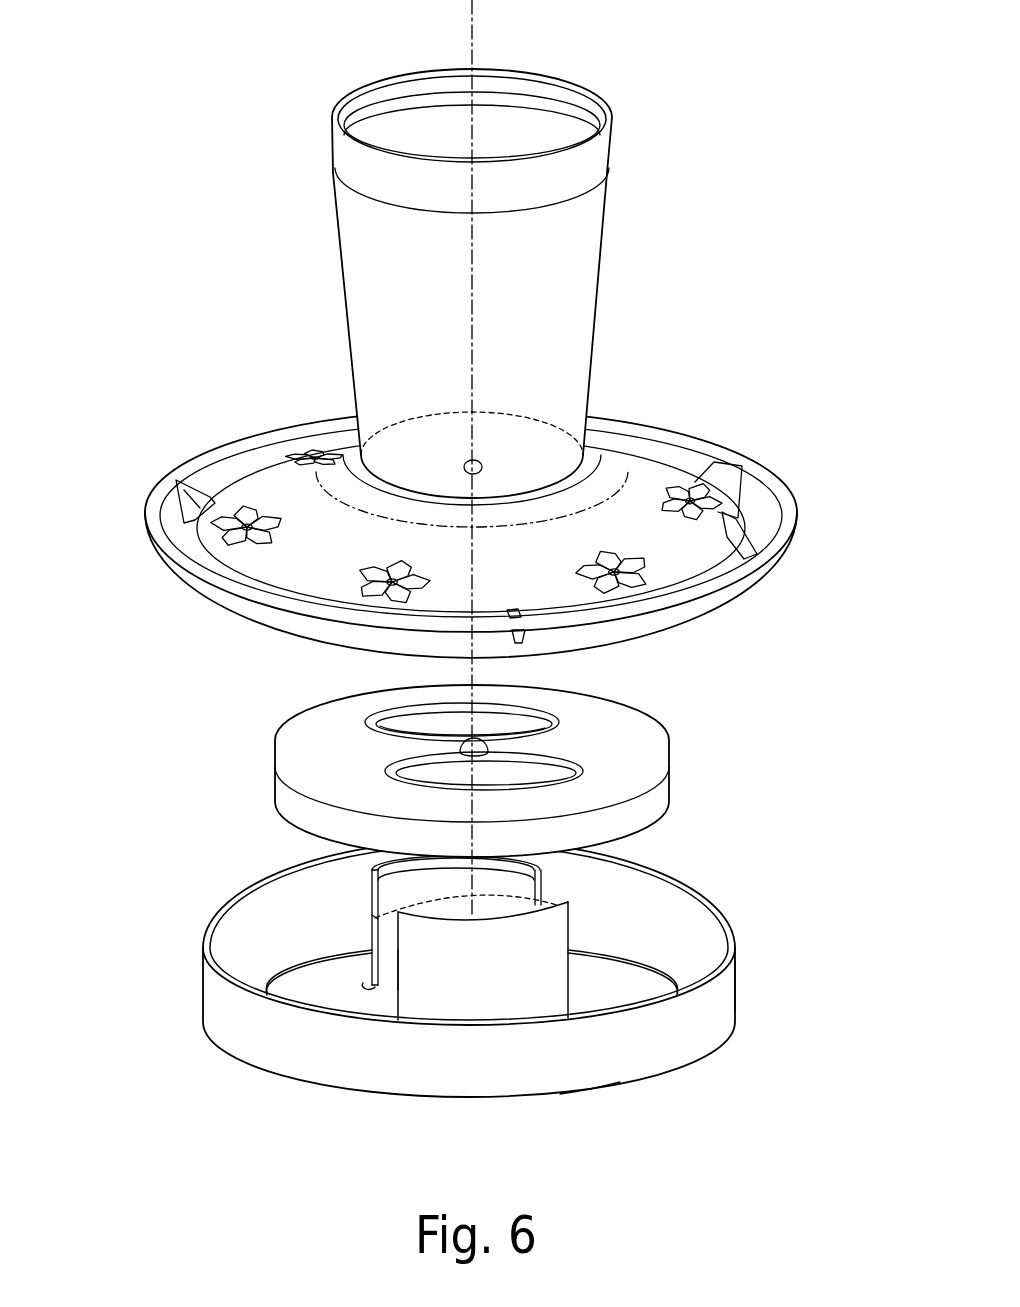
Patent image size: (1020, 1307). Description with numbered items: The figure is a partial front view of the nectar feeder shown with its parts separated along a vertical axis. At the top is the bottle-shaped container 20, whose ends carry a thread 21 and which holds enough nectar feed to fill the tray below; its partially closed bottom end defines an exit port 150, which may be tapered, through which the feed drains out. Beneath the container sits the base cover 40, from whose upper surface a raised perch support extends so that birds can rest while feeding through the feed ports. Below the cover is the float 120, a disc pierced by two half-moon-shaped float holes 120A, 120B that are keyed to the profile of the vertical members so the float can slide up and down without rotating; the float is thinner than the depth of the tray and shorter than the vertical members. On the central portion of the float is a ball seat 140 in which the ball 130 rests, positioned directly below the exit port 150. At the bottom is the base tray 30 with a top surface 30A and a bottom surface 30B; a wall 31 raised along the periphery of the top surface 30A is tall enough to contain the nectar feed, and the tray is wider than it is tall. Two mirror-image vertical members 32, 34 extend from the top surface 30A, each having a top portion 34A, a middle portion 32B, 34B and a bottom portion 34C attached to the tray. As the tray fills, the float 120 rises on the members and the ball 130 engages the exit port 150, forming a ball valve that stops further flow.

The container 20 is at (607, 257).
The thread 21 is at (565, 105).
The exit port 150 is at (478, 464).
The base cover 40 is at (692, 540).
The float 120 is at (670, 775).
The float hole 120A is at (378, 717).
The float hole 120B is at (437, 780).
The ball 130 is at (540, 710).
The ball seat 140 is at (482, 733).
The base tray 30 is at (680, 1060).
The top surface 30A is at (695, 990).
The bottom surface 30B is at (590, 1088).
The wall 31 is at (630, 1052).
The vertical member 32 is at (568, 947).
The middle portion 32B is at (397, 963).
The vertical member 34 is at (715, 911).
The top portion 34A is at (372, 872).
The middle portion 34B is at (372, 917).
The bottom portion 34C is at (370, 983).